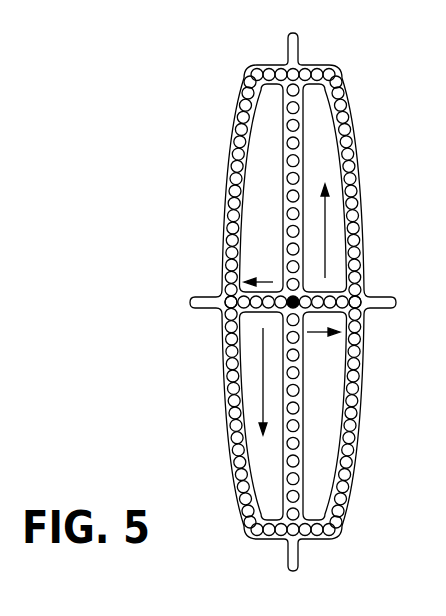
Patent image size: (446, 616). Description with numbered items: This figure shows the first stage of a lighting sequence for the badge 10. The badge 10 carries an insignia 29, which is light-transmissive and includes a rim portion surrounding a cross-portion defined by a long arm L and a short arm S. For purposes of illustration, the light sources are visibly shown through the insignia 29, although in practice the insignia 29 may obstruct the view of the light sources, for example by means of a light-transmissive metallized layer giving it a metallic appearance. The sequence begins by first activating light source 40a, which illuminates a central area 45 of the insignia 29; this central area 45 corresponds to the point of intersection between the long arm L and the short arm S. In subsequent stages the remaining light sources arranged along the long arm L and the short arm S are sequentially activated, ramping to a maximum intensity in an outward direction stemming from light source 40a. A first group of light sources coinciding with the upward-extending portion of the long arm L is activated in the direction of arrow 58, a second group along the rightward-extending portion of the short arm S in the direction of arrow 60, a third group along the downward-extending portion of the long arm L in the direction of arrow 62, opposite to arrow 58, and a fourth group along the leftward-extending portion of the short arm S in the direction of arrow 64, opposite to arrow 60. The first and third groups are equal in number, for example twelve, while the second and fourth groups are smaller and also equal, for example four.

The badge 10 is at (180, 120).
The insignia 29 is at (318, 65).
The short arm S is at (312, 311).
The light source 40a is at (280, 293).
The central area 45 is at (318, 310).
The long arm L is at (303, 243).
The arrow 58 is at (325, 210).
The arrow 64 is at (271, 280).
The arrow 62 is at (263, 378).
The arrow 60 is at (338, 414).